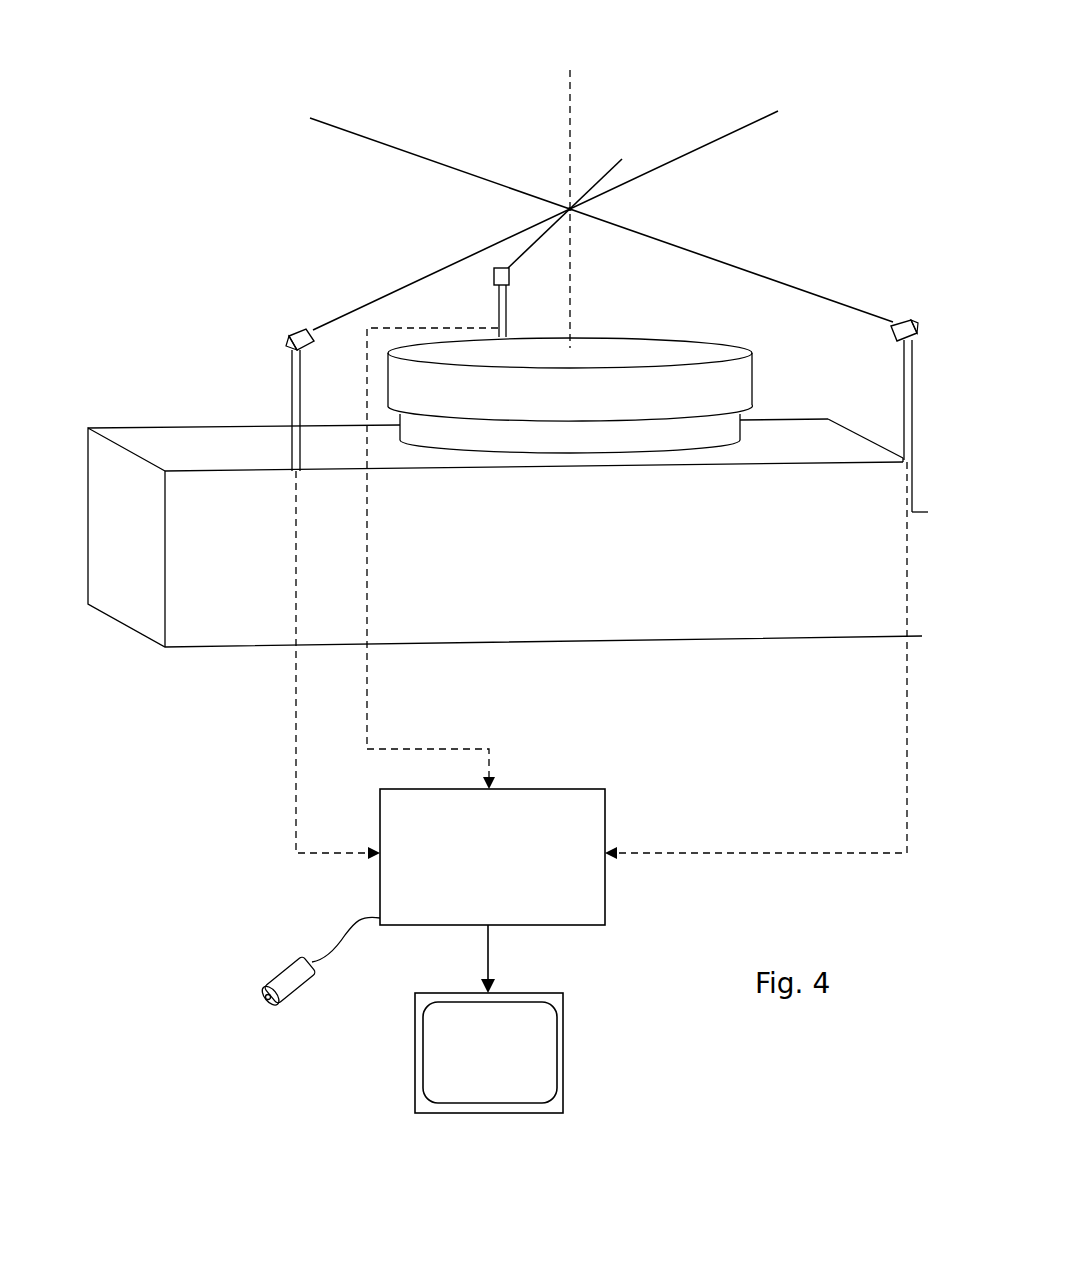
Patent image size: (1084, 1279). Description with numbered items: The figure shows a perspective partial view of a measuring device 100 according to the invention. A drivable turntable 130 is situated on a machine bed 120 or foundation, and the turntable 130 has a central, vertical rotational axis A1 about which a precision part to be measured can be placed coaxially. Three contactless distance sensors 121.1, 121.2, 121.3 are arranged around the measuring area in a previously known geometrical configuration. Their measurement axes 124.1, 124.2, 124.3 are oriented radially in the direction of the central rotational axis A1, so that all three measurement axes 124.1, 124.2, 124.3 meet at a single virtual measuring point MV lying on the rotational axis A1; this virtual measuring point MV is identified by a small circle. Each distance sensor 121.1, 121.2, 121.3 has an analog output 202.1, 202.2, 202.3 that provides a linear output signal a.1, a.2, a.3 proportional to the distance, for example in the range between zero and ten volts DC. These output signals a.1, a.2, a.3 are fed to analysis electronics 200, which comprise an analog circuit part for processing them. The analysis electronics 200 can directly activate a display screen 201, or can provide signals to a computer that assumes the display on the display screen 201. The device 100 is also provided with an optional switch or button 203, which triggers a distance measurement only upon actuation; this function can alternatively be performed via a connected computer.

The measuring device 100 is at (326, 76).
The rotational axis A1 is at (569, 196).
The virtual measuring point MV is at (571, 212).
The measurement axis 124.1 is at (370, 302).
The measurement axis 124.2 is at (610, 168).
The measurement axis 124.3 is at (757, 277).
The distance sensor 121.1 is at (292, 328).
The distance sensor 121.2 is at (493, 278).
The distance sensor 121.3 is at (896, 318).
The turntable 130 is at (722, 388).
The machine bed 120 is at (448, 623).
The analog output 202.1 is at (295, 686).
The analog output 202.2 is at (378, 528).
The analog output 202.3 is at (905, 706).
The output signal a.1 is at (267, 787).
The output signal a.2 is at (391, 740).
The output signal a.3 is at (785, 841).
The analysis electronics 200 is at (514, 865).
The display screen 201 is at (565, 1025).
The switch or button 203 is at (287, 988).